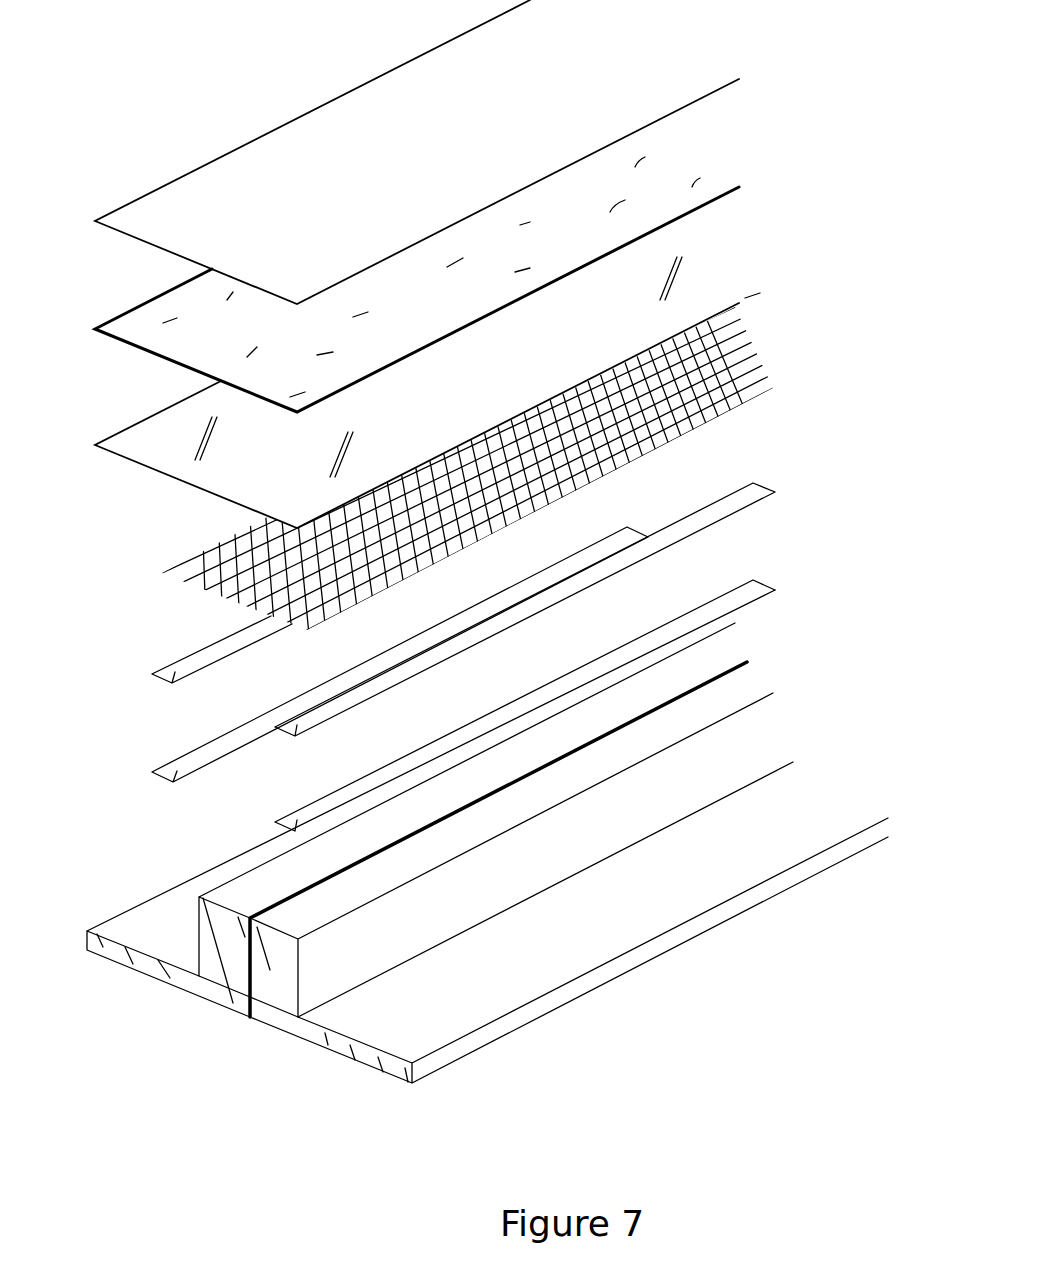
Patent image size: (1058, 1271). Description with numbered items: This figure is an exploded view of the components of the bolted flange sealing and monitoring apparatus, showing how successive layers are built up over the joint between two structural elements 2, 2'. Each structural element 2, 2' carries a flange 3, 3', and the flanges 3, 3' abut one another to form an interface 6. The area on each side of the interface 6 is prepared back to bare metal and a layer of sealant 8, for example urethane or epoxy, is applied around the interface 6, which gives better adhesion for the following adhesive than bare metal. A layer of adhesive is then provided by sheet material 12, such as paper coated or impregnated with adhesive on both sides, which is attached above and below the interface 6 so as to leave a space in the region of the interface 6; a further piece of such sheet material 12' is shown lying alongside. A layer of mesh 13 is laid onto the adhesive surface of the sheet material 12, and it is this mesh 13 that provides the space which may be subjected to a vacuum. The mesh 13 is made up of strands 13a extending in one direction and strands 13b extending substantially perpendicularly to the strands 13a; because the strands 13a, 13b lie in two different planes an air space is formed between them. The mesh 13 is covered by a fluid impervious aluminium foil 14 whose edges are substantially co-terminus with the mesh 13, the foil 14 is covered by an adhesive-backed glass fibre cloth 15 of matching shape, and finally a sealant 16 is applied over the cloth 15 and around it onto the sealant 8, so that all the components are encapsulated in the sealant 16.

The sealant 16 is at (147, 222).
The glass fibre cloth 15 is at (192, 300).
The aluminium foil 14 is at (185, 428).
The mesh 13 is at (456, 494).
The strands of material 13a is at (200, 558).
The strands of material 13b is at (475, 494).
The strip 12' is at (192, 676).
The sheet material 12 is at (505, 646).
The sealant 8 is at (275, 823).
The structural element 2 is at (425, 811).
The flange 3 is at (437, 841).
The interface 6 is at (243, 992).
The flange 3' is at (521, 909).
The structural element 2' is at (569, 984).